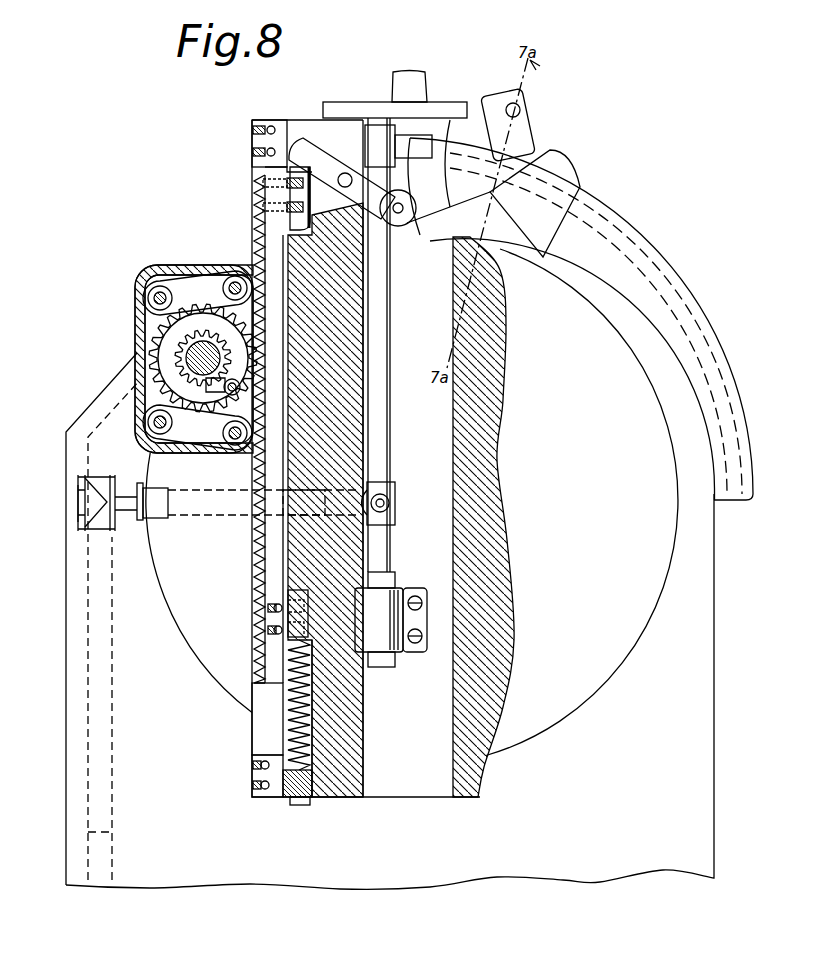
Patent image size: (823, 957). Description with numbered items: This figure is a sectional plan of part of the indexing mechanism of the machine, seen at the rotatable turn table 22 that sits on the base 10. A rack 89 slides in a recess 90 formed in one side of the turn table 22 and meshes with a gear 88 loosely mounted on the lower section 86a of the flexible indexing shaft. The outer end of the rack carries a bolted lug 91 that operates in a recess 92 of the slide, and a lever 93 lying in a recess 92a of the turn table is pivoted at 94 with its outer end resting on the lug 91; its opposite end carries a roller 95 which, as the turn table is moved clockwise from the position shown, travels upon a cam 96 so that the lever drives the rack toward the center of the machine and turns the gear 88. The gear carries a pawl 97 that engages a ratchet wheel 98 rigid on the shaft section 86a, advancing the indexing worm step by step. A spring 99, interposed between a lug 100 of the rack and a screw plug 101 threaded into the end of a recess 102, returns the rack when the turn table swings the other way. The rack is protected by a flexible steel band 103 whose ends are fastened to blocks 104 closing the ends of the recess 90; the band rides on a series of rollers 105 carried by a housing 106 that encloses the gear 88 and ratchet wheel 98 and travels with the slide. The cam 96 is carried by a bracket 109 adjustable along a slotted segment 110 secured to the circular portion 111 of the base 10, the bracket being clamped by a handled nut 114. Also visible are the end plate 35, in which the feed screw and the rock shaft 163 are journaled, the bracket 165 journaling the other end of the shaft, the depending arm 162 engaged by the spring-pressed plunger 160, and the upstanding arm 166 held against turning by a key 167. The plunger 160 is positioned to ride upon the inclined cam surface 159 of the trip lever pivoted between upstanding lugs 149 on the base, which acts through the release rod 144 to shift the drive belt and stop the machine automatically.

The base 10 is at (600, 813).
The turn table 22 is at (585, 694).
The bearing plate 35 is at (354, 101).
The lower section of flexible shaft 86a is at (222, 340).
The gear 88 is at (160, 328).
The rack 89 is at (256, 252).
The recess 90 is at (268, 713).
The lug 91 is at (262, 183).
The recess 92 is at (293, 237).
The recess 92a is at (320, 132).
The lever 93 is at (300, 214).
The pivot 94 is at (348, 172).
The roller 95 is at (403, 226).
The cam 96 is at (450, 207).
The pawl 97 is at (228, 395).
The ratchet wheel 98 is at (178, 357).
The spring 99 is at (310, 722).
The lug 100 is at (274, 609).
The screw plug 101 is at (306, 806).
The recess 102 is at (312, 722).
The flexible band 103 is at (253, 553).
The blocks 104 is at (255, 121).
The rollers 105 is at (247, 270).
The housing 106 is at (148, 282).
The bracket 109 is at (557, 170).
The segment 110 is at (609, 214).
The circular portion 111 is at (613, 268).
The nut 114 is at (535, 115).
The release rod 144 is at (68, 785).
The lugs 149 is at (103, 527).
The cam surface 159 is at (105, 480).
The spring-pressed plunger 160 is at (131, 508).
The arm 162 is at (388, 485).
The rock shaft 163 is at (389, 440).
The bracket 165 is at (418, 590).
The upstanding arm 166 is at (405, 143).
The key 167 is at (390, 400).